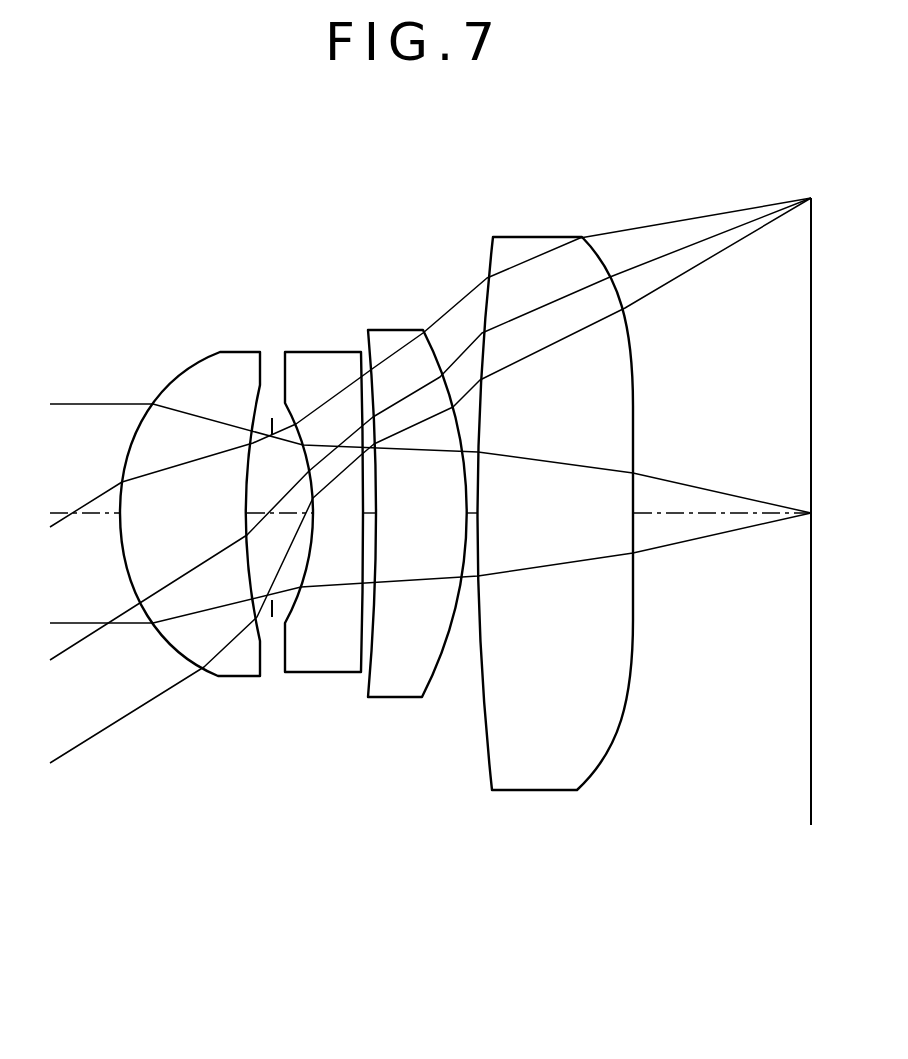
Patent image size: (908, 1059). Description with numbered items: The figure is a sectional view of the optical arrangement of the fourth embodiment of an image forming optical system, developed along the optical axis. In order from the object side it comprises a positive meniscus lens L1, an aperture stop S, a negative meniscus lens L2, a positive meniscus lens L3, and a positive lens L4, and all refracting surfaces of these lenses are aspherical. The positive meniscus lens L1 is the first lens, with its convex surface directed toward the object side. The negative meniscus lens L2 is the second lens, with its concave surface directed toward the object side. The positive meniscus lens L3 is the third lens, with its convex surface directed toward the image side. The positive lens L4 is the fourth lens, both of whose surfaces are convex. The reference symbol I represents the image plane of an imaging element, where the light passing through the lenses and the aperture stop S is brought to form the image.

The positive meniscus lens L1 is at (240, 677).
The negative meniscus lens L2 is at (322, 673).
The positive meniscus lens L3 is at (392, 698).
The positive lens L4 is at (537, 790).
The aperture stop S is at (272, 617).
The image plane I is at (811, 810).